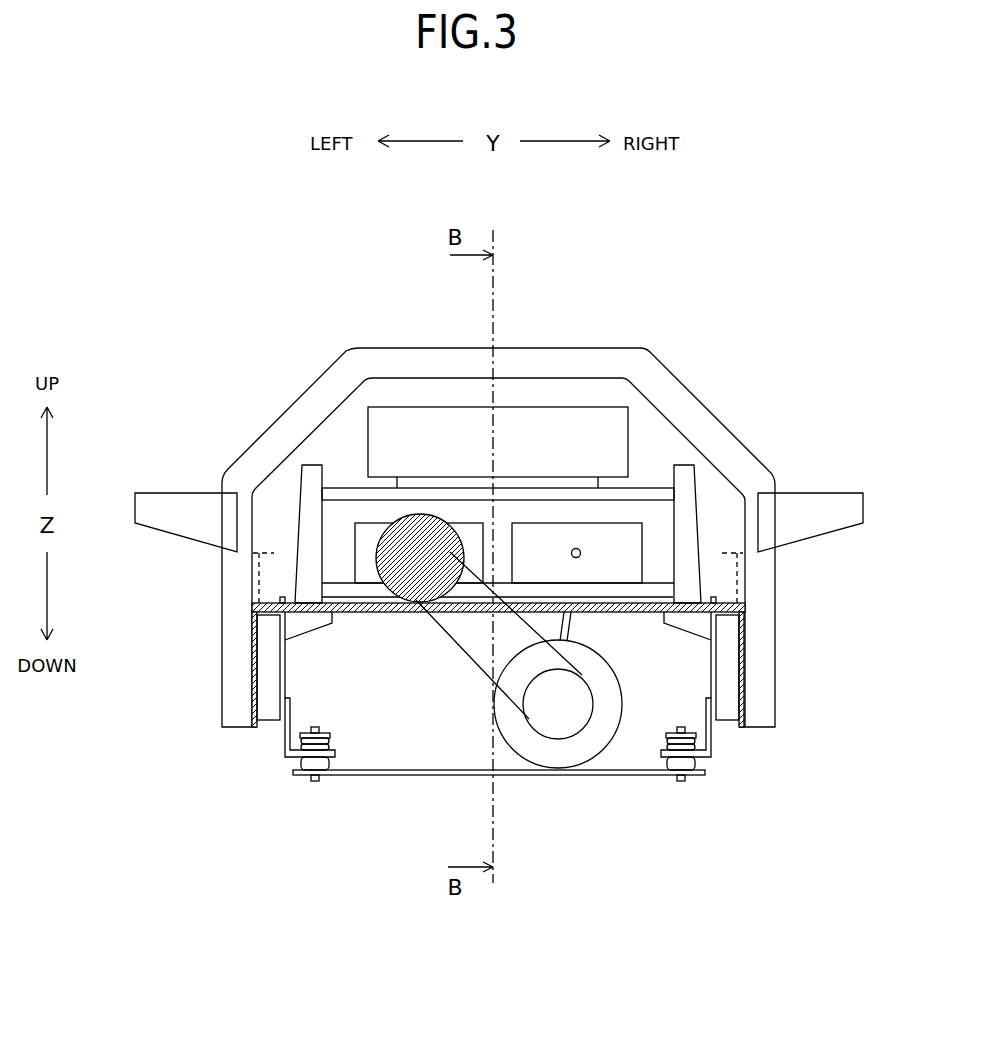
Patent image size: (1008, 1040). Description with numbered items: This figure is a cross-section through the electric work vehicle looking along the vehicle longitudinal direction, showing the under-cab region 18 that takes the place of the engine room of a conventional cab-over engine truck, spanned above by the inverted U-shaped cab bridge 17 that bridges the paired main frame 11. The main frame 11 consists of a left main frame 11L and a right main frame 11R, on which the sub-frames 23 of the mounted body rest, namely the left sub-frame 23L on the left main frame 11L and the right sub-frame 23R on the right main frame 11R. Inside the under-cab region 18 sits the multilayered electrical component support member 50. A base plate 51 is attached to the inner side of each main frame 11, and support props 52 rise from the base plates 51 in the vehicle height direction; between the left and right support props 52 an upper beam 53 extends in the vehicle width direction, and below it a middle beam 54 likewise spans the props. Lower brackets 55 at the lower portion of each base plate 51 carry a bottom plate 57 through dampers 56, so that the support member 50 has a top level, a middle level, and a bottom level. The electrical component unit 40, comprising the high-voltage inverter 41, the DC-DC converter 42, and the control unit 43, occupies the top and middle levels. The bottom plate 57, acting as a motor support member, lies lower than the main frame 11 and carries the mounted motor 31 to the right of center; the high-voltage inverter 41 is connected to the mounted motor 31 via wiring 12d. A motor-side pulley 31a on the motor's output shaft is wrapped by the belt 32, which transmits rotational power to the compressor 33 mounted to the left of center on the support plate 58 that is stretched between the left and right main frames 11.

The main frame 11 is at (496, 625).
The left main frame 11L is at (247, 702).
The right main frame 11R is at (748, 698).
The wiring 12d is at (570, 624).
The cab bridge 17 is at (364, 348).
The under-cab region 18 is at (406, 392).
The sub-frames 23 is at (496, 553).
The left sub-frame 23L is at (248, 582).
The right sub-frame 23R is at (747, 583).
The mounted motor 31 is at (608, 741).
The motor-side pulley 31a is at (562, 739).
The belt 32 is at (458, 648).
The compressor 33 is at (380, 585).
The electrical component unit 40 is at (503, 456).
The high-voltage inverter 41 is at (580, 523).
The DC-DC converter 42 is at (463, 523).
The control unit 43 is at (558, 407).
The electrical component support member 50 is at (517, 457).
The base plate 51 is at (262, 660).
The support props 52 is at (315, 455).
The upper beam 53 is at (647, 488).
The middle beam 54 is at (653, 580).
The lower brackets 55 is at (287, 740).
The dampers 56 is at (295, 758).
The bottom plate 57 is at (399, 776).
The support plate 58 is at (340, 613).